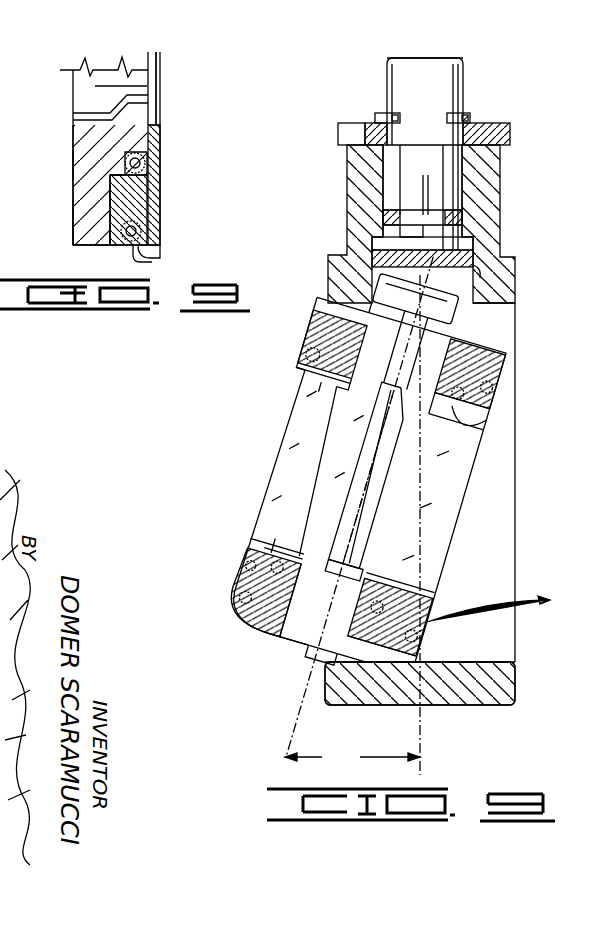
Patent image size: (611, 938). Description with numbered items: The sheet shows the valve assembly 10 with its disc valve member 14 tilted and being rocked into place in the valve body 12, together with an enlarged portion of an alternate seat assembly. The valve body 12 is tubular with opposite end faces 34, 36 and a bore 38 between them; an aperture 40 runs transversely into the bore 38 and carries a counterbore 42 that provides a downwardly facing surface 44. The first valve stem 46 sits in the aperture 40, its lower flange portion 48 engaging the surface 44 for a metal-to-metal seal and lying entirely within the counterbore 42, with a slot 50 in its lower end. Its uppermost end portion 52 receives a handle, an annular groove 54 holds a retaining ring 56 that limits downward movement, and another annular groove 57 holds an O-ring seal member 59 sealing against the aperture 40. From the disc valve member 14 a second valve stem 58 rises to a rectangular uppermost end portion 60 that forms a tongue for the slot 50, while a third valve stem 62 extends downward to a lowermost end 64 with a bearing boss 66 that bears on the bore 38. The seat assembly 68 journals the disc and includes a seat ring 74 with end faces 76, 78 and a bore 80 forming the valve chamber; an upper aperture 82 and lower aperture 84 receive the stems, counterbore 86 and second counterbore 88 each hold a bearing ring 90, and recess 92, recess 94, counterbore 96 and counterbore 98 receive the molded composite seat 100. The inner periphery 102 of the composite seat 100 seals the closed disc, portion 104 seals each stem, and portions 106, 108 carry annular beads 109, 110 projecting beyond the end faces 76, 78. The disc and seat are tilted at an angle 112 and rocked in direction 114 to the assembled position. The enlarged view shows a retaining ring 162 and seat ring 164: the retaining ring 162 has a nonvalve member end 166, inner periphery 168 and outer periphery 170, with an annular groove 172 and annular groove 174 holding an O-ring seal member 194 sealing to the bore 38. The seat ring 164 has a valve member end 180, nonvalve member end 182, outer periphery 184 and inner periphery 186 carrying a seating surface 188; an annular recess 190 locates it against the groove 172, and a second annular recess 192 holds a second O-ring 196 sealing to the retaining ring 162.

In FIG. 3, the valve assembly 10 is at (485, 87).
In FIG. 3, the valve body 12 is at (482, 704).
In FIG. 3, the disc valve member 14 is at (370, 476).
In FIG. 3, the end face 34 is at (330, 700).
In FIG. 3, the end face 36 is at (517, 688).
In FIG. 3, the bore 38 is at (498, 666).
In FIG. 3, the aperture 40 is at (384, 162).
In FIG. 3, the counterbore 42 is at (483, 268).
In FIG. 3, the downwardly facing surface 44 is at (470, 240).
In FIG. 3, the first valve stem 46 is at (450, 165).
In FIG. 3, the lower flange portion 48 is at (455, 255).
In FIG. 3, the slot 50 is at (480, 288).
In FIG. 3, the uppermost end portion 52 is at (440, 70).
In FIG. 3, the annular groove 54 is at (400, 117).
In FIG. 3, the retaining ring 56 is at (380, 115).
In FIG. 3, the annular groove 57 is at (418, 215).
In FIG. 3, the second valve stem 58 is at (468, 335).
In FIG. 3, the O-ring seal member 59 is at (385, 215).
In FIG. 3, the uppermost end portion 60 is at (376, 285).
In FIG. 3, the third valve stem 62 is at (362, 576).
In FIG. 3, the lowermost end 64 is at (290, 626).
In FIG. 3, the bearing boss 66 is at (300, 652).
In FIG. 3, the seat assembly 68 is at (258, 536).
In FIG. 3, the seat ring 74 is at (258, 610).
In FIG. 3, the end face 76 is at (236, 595).
In FIG. 3, the end face 78 is at (416, 652).
In FIG. 3, the bore 80 is at (282, 545).
In FIG. 3, the upper aperture 82 is at (450, 327).
In FIG. 3, the lower aperture 84 is at (278, 632).
In FIG. 3, the counterbore 86 is at (315, 325).
In FIG. 3, the second counterbore 88 is at (406, 640).
In FIG. 3, the bearing ring 90 is at (358, 340).
In FIG. 3, the recess 92 is at (470, 360).
In FIG. 3, the recess 94 is at (246, 565).
In FIG. 3, the counterbore 96 is at (313, 366).
In FIG. 3, the counterbore 98 is at (492, 376).
In FIG. 3, the composite seat 100 is at (420, 592).
In FIG. 3, the inner periphery 102 is at (430, 576).
In FIG. 3, the portion 104 is at (350, 372).
In FIG. 3, the portion 106 is at (310, 345).
In FIG. 3, the portion 108 is at (420, 632).
In FIG. 3, the annular bead 109 is at (236, 585).
In FIG. 3, the annular bead 110 is at (500, 370).
In FIG. 3, the angle 112 is at (392, 670).
In FIG. 3, the direction 114 is at (524, 616).
In FIG. 5, the retaining ring 162 is at (150, 190).
In FIG. 5, the seat ring 164 is at (80, 137).
In FIG. 5, the nonvalve member end 166 is at (88, 217).
In FIG. 5, the inner periphery 168 is at (161, 116).
In FIG. 5, the outer periphery 170 is at (165, 242).
In FIG. 5, the annular groove 172 is at (124, 166).
In FIG. 5, the annular groove 174 is at (142, 214).
In FIG. 5, the valve member end 180 is at (162, 130).
In FIG. 5, the nonvalve member end 182 is at (72, 163).
In FIG. 5, the outer periphery 184 is at (78, 244).
In FIG. 5, the inner periphery 186 is at (88, 110).
In FIG. 5, the seating surface 188 is at (150, 88).
In FIG. 5, the annular recess 190 is at (110, 185).
In FIG. 5, the second annular recess 192 is at (126, 146).
In FIG. 5, the O-ring seal member 194 is at (156, 258).
In FIG. 5, the second O-ring 196 is at (160, 163).